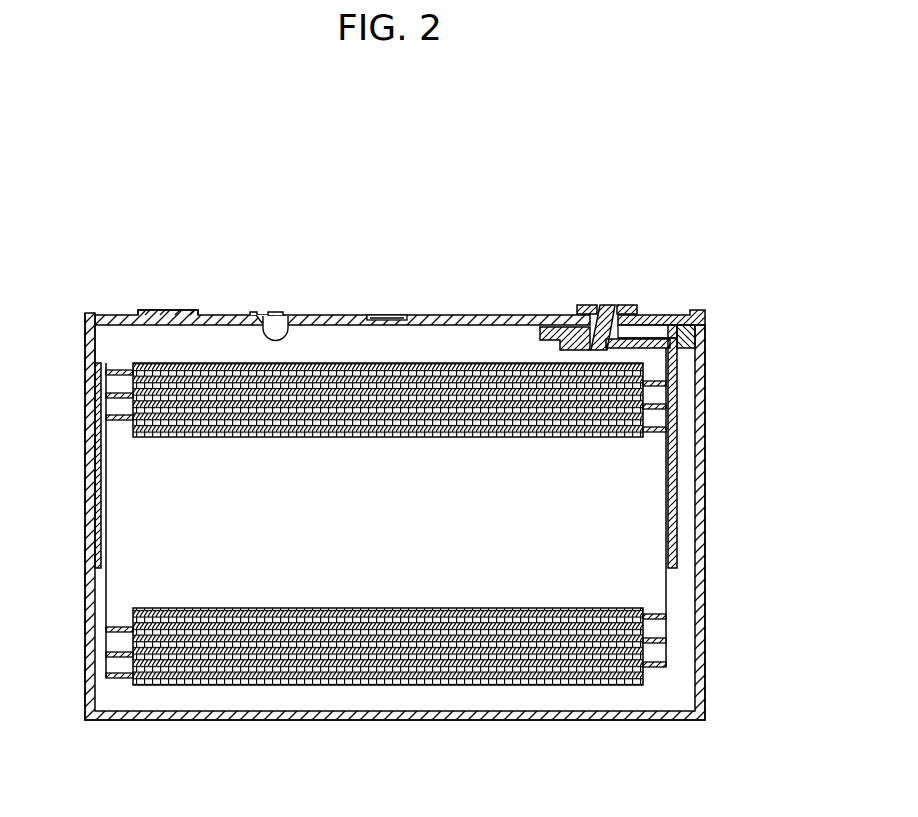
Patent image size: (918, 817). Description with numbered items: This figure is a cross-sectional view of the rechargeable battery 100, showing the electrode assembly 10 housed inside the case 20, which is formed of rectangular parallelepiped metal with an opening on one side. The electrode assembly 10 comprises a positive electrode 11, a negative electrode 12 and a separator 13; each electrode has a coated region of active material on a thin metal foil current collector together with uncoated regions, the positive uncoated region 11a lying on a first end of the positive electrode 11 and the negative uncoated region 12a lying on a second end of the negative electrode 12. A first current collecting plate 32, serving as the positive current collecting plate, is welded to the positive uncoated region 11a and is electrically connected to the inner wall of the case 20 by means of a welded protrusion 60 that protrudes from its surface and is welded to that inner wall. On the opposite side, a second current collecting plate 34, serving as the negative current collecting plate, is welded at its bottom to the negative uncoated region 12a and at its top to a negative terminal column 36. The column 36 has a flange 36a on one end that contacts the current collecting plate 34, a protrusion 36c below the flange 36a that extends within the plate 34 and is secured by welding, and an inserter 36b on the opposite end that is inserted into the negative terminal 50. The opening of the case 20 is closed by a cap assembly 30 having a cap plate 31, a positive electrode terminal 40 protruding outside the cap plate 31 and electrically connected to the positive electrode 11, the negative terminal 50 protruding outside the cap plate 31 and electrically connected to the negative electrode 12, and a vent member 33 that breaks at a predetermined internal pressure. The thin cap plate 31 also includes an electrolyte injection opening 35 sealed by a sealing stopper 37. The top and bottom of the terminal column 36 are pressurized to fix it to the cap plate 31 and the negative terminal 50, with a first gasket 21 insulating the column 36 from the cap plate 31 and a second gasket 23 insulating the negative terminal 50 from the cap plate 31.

The rechargeable battery 100 is at (569, 193).
The electrode assembly 10 is at (386, 564).
The positive electrode 11 is at (228, 682).
The positive uncoated region 11a is at (117, 682).
The negative electrode 12 is at (558, 668).
The negative uncoated region 12a is at (663, 670).
The separator 13 is at (390, 660).
The case 20 is at (707, 553).
The first gasket 21 is at (556, 340).
The second gasket 23 is at (577, 311).
The cap assembly 30 is at (342, 286).
The cap plate 31 is at (463, 314).
The first current collecting plate 32 is at (100, 487).
The vent member 33 is at (404, 315).
The second current collecting plate 34 is at (682, 495).
The electrolyte injection opening 35 is at (288, 328).
The negative terminal column 36 is at (681, 310).
The flange 36a is at (697, 328).
The inserter 36b is at (606, 305).
The protrusion 36c is at (608, 351).
The sealing stopper 37 is at (263, 313).
The positive electrode terminal 40 is at (165, 310).
The negative terminal 50 is at (585, 305).
The welded protrusion 60 is at (93, 382).